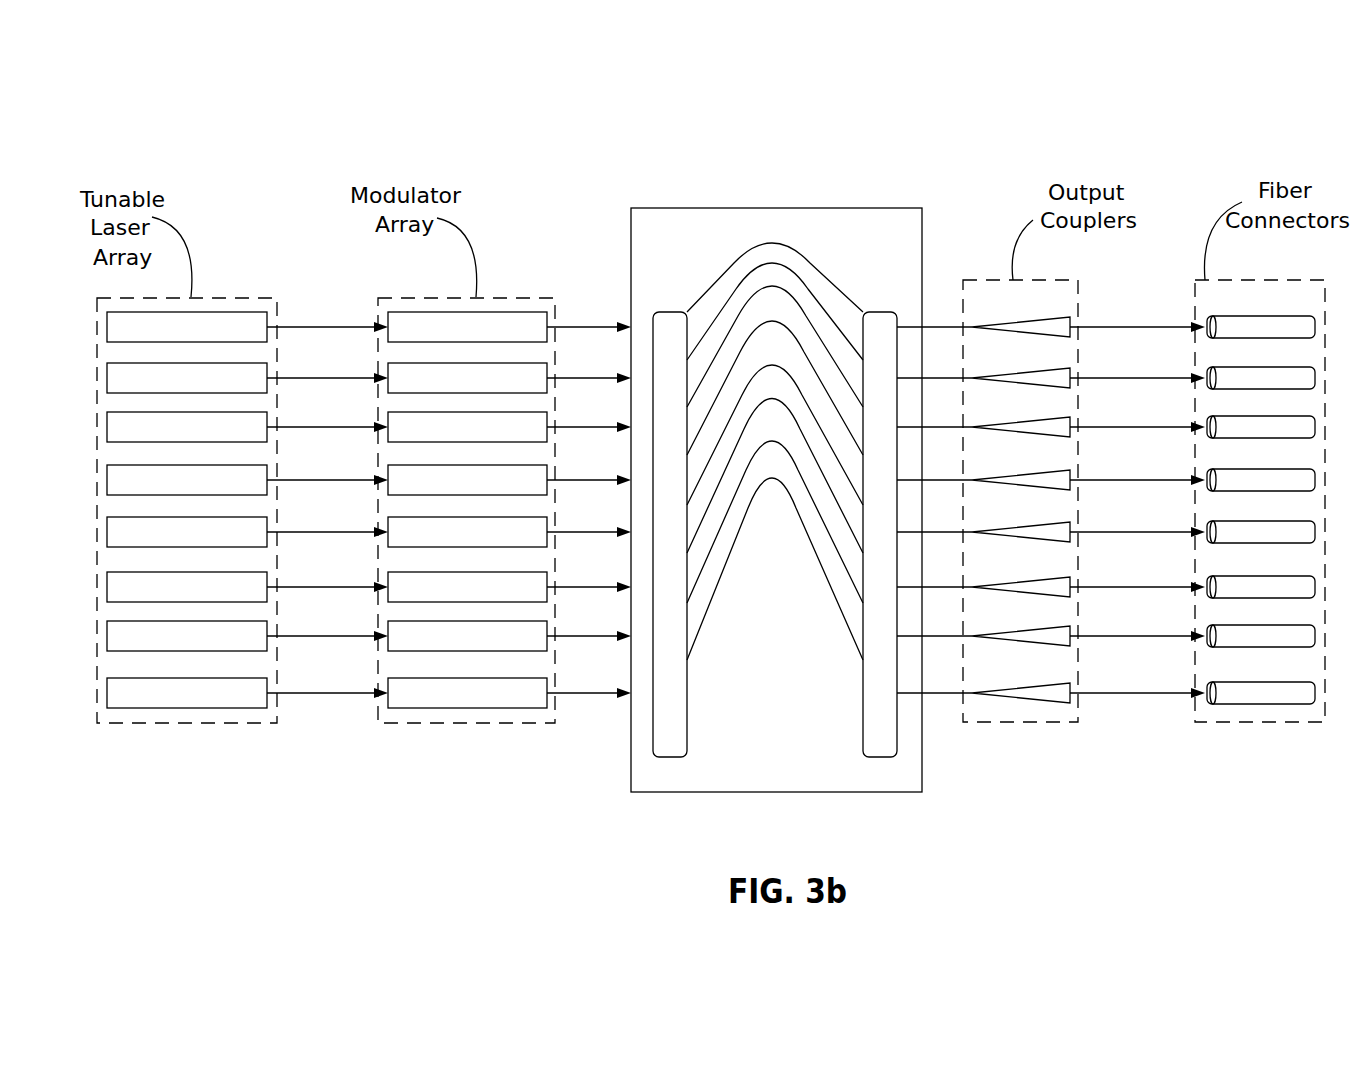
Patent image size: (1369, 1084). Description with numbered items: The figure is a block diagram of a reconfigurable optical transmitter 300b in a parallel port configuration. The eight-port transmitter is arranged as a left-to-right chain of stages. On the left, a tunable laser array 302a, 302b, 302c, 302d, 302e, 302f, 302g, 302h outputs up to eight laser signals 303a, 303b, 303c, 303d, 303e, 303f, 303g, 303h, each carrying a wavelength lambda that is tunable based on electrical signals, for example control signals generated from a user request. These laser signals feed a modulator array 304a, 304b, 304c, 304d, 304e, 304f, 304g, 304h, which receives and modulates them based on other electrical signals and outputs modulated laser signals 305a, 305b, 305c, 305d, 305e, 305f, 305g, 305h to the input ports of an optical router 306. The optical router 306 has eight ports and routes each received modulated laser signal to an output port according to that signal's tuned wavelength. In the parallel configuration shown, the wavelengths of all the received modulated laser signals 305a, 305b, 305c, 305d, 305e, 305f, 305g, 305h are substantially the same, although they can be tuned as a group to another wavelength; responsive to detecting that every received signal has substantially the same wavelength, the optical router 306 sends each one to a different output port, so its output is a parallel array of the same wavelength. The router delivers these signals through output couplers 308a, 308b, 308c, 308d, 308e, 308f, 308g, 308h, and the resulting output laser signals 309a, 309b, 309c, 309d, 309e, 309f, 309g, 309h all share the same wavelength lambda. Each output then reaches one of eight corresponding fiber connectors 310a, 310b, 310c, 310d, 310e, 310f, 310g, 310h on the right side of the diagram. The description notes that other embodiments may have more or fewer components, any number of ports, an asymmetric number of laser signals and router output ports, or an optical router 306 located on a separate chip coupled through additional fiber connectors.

The reconfigurable optical transmitter 300b is at (784, 145).
The tunable laser array 302a is at (187, 327).
The tunable laser array 302b is at (187, 378).
The tunable laser array 302c is at (187, 427).
The tunable laser array 302d is at (187, 480).
The tunable laser array 302e is at (187, 532).
The tunable laser array 302f is at (187, 587).
The tunable laser array 302g is at (187, 636).
The tunable laser array 302h is at (187, 693).
The laser signal 303a is at (369, 325).
The laser signal 303b is at (369, 376).
The laser signal 303c is at (369, 425).
The laser signal 303d is at (369, 478).
The laser signal 303e is at (369, 530).
The laser signal 303f is at (369, 585).
The laser signal 303g is at (369, 634).
The laser signal 303h is at (369, 691).
The modulator array 304a is at (467, 327).
The modulator array 304b is at (467, 378).
The modulator array 304c is at (467, 427).
The modulator array 304d is at (467, 480).
The modulator array 304e is at (467, 532).
The modulator array 304f is at (467, 587).
The modulator array 304g is at (467, 636).
The modulator array 304h is at (467, 693).
The modulated laser signal 305a is at (625, 325).
The modulated laser signal 305b is at (625, 376).
The modulated laser signal 305c is at (625, 425).
The modulated laser signal 305d is at (625, 478).
The modulated laser signal 305e is at (625, 530).
The modulated laser signal 305f is at (625, 585).
The modulated laser signal 305g is at (625, 634).
The modulated laser signal 305h is at (625, 691).
The optical router 306 is at (776, 500).
The output coupler 308a is at (985, 322).
The output coupler 308b is at (985, 373).
The output coupler 308c is at (985, 422).
The output coupler 308d is at (985, 475).
The output coupler 308e is at (985, 527).
The output coupler 308f is at (985, 582).
The output coupler 308g is at (985, 631).
The output coupler 308h is at (985, 688).
The laser signal 309a is at (1095, 325).
The laser signal 309b is at (1095, 376).
The laser signal 309c is at (1095, 425).
The laser signal 309d is at (1095, 478).
The laser signal 309e is at (1095, 530).
The laser signal 309f is at (1095, 585).
The laser signal 309g is at (1095, 634).
The laser signal 309h is at (1095, 691).
The fiber connector 310a is at (1218, 315).
The fiber connector 310b is at (1218, 366).
The fiber connector 310c is at (1218, 415).
The fiber connector 310d is at (1218, 468).
The fiber connector 310e is at (1218, 520).
The fiber connector 310f is at (1218, 575).
The fiber connector 310g is at (1218, 624).
The fiber connector 310h is at (1218, 681).